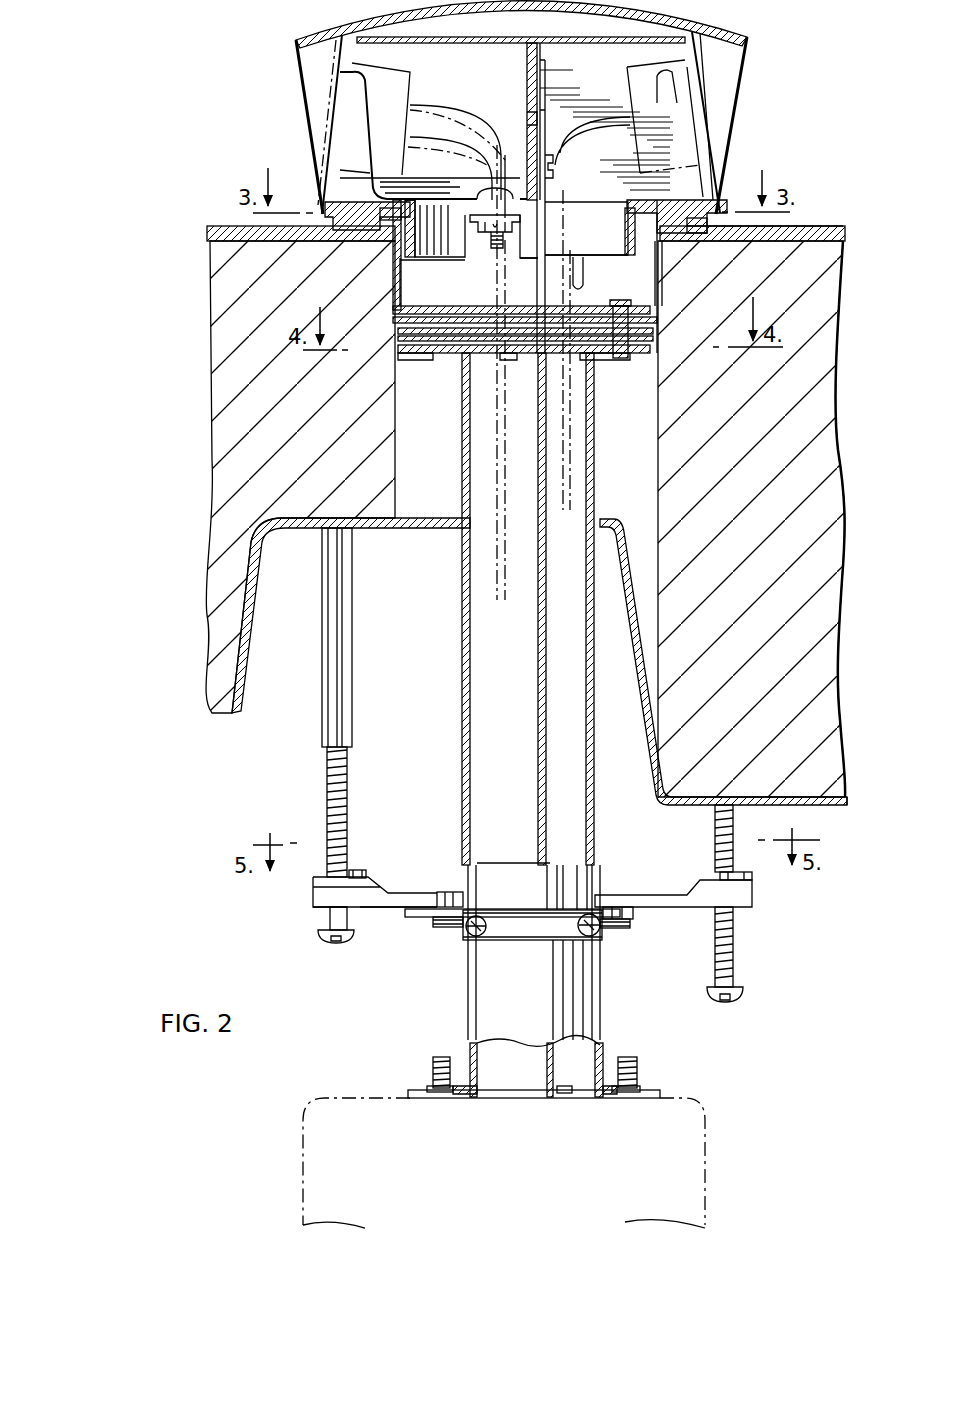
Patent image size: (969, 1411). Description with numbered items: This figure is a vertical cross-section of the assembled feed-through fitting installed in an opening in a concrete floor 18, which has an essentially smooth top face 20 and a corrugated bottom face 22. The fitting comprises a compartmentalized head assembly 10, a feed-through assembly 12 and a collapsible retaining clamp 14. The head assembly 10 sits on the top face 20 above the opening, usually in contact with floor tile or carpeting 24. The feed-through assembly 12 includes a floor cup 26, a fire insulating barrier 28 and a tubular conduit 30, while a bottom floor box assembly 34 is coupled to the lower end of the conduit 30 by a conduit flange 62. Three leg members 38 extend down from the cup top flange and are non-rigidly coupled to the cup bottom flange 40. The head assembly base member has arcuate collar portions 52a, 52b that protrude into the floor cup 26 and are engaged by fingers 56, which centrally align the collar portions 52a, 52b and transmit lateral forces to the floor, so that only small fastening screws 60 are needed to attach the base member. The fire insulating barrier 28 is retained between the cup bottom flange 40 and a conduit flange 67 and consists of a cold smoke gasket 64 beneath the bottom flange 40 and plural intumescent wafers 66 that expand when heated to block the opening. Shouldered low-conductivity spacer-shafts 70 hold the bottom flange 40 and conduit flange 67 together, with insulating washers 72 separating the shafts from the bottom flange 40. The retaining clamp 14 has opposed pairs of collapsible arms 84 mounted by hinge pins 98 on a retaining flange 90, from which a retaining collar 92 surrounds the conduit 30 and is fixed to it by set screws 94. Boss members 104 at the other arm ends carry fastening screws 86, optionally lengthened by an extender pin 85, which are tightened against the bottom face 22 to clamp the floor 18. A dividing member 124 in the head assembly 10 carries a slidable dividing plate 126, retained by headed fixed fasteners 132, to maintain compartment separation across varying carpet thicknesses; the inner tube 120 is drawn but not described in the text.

The compartmentalized head assembly 10 is at (747, 88).
The feed-through assembly 12 is at (458, 622).
The collapsible retaining clamp 14 is at (360, 950).
The concrete floor 18 is at (754, 487).
The top face 20 is at (830, 227).
The bottom face 22 is at (825, 806).
The floor tile or carpeting 24 is at (800, 226).
The floor cup 26 is at (530, 293).
The fire insulating barrier 28 is at (390, 343).
The tubular conduit 30 is at (598, 825).
The bottom floor box assembly 34 is at (469, 1161).
The leg members 38 is at (393, 300).
The cup bottom flange 40 is at (450, 306).
The arcuate collar portion 52a is at (410, 200).
The arcuate collar portion 52b is at (522, 232).
The fingers 56 is at (692, 232).
The fastening screws 60 is at (488, 249).
The conduit flange 62 is at (655, 1090).
The cold smoke gasket 64 is at (660, 305).
The intumescent wafers 66 is at (657, 318).
The conduit flange 67 is at (425, 363).
The spacer-shafts 70 is at (620, 360).
The insulating washers 72 is at (640, 300).
The collapsible arms 84 is at (350, 907).
The extender pin 85 is at (352, 578).
The fastening screws 86 is at (348, 782).
The retaining flange 90 is at (440, 913).
The retaining collar 92 is at (545, 925).
The set screws 94 is at (466, 930).
The hinge pins 98 is at (447, 892).
The boss members 104 is at (361, 873).
The inner tube 120 is at (538, 557).
The dividing member 124 is at (528, 66).
The dividing plate 126 is at (528, 112).
The headed fixed fasteners 132 is at (560, 153).